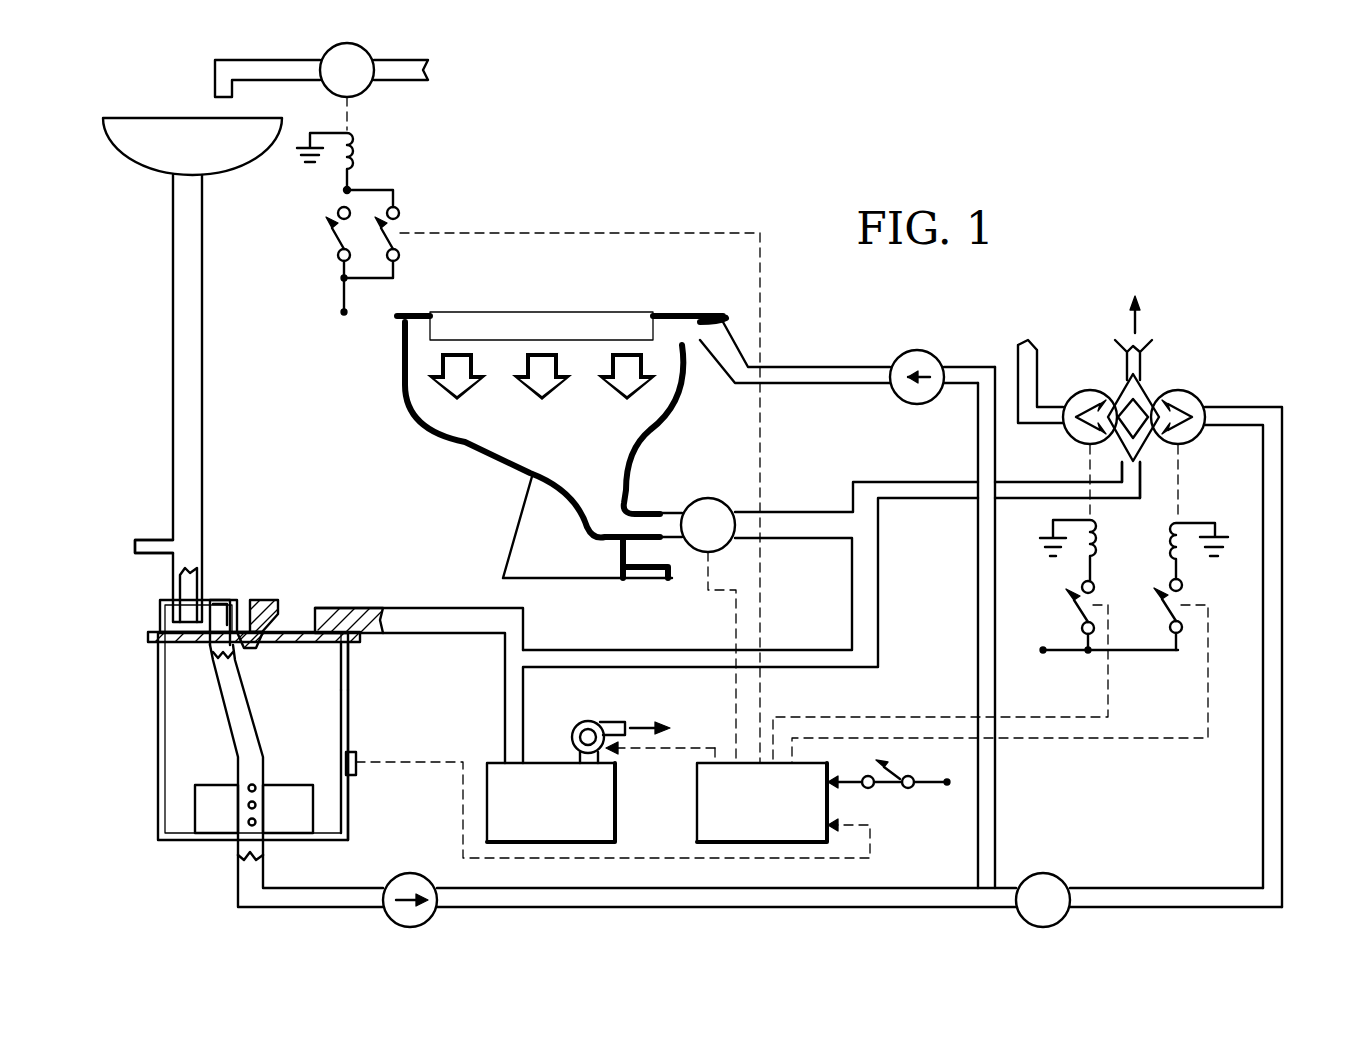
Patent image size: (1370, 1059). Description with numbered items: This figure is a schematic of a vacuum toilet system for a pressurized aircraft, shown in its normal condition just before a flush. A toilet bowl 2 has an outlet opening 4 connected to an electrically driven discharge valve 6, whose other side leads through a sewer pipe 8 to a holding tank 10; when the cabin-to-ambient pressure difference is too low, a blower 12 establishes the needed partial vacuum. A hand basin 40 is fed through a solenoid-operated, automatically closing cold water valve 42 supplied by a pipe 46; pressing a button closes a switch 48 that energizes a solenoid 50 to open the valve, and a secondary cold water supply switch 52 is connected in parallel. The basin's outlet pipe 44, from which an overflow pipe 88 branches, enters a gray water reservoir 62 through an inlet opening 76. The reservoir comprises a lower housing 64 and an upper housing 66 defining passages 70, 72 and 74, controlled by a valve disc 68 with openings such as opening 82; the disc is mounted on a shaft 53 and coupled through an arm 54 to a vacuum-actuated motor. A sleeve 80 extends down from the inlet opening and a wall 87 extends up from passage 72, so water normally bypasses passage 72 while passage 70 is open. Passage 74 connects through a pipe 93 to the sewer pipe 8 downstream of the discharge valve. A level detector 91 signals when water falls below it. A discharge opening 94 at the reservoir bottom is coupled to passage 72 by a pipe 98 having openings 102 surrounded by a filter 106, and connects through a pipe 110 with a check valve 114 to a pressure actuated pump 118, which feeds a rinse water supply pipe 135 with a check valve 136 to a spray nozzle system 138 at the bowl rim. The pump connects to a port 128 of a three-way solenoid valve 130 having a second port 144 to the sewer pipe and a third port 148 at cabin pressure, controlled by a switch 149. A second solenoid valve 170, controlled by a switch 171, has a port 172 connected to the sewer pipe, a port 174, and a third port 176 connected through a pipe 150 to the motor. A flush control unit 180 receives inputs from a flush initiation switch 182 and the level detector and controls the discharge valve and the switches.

The toilet bowl 2 is at (455, 450).
The outlet opening 4 is at (605, 522).
The discharge valve 6 is at (738, 505).
The sewer pipe 8 is at (830, 512).
The holding tank 10 is at (615, 808).
The blower 12 is at (600, 720).
The hand basin 40 is at (148, 118).
The cold water valve 42 is at (372, 88).
The outlet pipe 44 is at (173, 305).
The pipe 46 is at (415, 80).
The switch 48 is at (330, 240).
The solenoid 50 is at (356, 163).
The secondary cold water supply switch 52 is at (400, 233).
The shaft 53 is at (255, 648).
The arm 54 is at (272, 600).
The gray water reservoir 62 is at (158, 770).
The lower housing 64 is at (348, 735).
The upper housing 66 is at (295, 632).
The valve disc 68 is at (345, 652).
The passage 70 is at (168, 650).
The passage 72 is at (228, 605).
The passage 74 is at (335, 632).
The inlet opening 76 is at (180, 585).
The sleeve 80 is at (162, 618).
The opening 82 is at (210, 652).
The wall 87 is at (212, 600).
The overflow pipe 88 is at (160, 538).
The level detector 91 is at (358, 775).
The pipe 93 is at (480, 608).
The discharge opening 94 is at (262, 855).
The pipe 98 is at (262, 720).
The openings 102 is at (240, 800).
The filter 106 is at (312, 790).
The pipe 110 is at (850, 888).
The check valve 114 is at (430, 876).
The pressure actuated pump 118 is at (1062, 876).
The port 128 is at (1285, 445).
The three-way solenoid valve 130 is at (1212, 398).
The rinse water supply pipe 135 is at (997, 812).
The check valve 136 is at (940, 355).
The spray nozzle system 138 is at (700, 318).
The second port 144 is at (1165, 458).
The third port 148 is at (1158, 378).
The switch 149 is at (1182, 605).
The pipe 150 is at (1018, 352).
The second solenoid valve 170 is at (1072, 388).
The switch 171 is at (1074, 605).
The port 172 is at (1120, 375).
The port 174 is at (1112, 458).
The third port 176 is at (1062, 430).
The flush control unit 180 is at (697, 783).
The flush initiation switch 182 is at (885, 790).